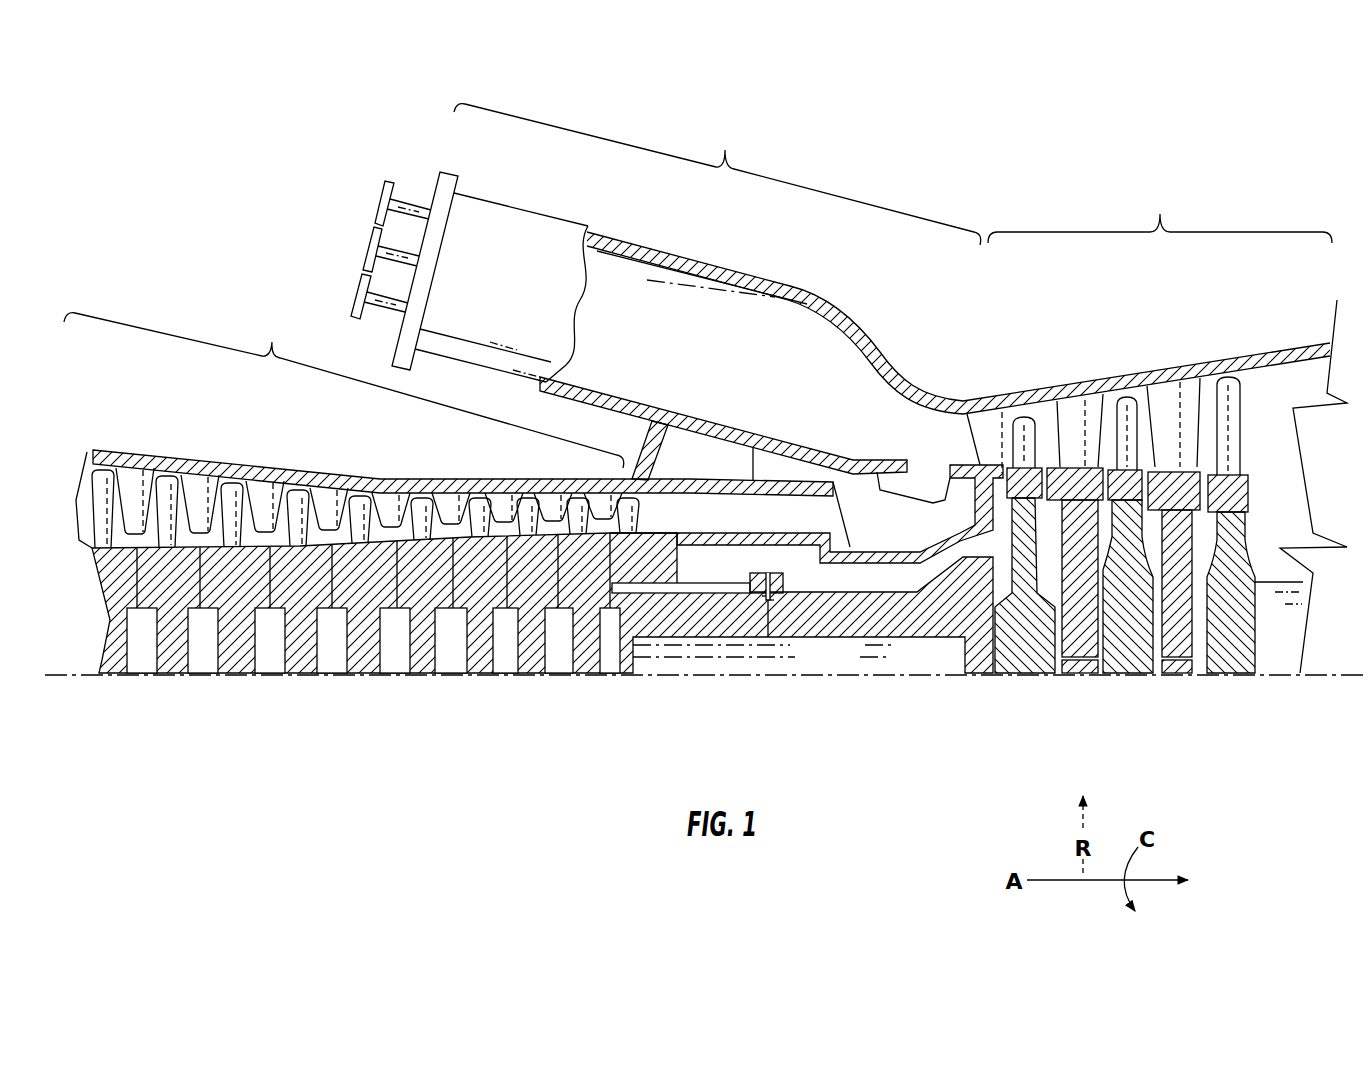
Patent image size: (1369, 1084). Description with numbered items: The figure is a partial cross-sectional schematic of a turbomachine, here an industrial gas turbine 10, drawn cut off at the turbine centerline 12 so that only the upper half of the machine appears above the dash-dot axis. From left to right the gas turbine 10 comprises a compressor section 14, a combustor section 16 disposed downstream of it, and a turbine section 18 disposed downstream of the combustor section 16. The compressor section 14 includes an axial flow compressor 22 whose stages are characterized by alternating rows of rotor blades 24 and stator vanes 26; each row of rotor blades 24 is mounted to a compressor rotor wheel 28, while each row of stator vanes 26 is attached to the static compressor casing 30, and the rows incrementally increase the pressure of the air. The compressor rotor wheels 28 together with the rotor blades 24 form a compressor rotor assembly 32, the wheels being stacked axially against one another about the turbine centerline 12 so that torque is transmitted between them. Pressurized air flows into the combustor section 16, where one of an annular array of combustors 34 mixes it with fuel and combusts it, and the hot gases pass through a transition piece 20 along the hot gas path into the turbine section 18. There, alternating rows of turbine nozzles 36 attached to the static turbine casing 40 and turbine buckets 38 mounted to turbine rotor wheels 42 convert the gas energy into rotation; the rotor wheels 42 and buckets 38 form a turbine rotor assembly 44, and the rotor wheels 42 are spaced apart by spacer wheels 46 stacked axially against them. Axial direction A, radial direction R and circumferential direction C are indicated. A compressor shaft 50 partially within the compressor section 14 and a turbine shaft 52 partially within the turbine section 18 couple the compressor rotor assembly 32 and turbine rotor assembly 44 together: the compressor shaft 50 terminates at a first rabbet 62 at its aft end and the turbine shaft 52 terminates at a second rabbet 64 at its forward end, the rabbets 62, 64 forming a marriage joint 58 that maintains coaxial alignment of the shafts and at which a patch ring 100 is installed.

The gas turbine 10 is at (198, 162).
The turbine centerline 12 is at (88, 676).
The compressor section 14 is at (344, 388).
The combustor section 16 is at (717, 204).
The turbine section 18 is at (1167, 426).
The transition piece 20 is at (712, 361).
The axial flow compressor 22 is at (193, 450).
The rotor blades 24 is at (167, 478).
The stator vanes 26 is at (267, 495).
The compressor rotor wheel 28 is at (295, 676).
The static compressor casing 30 is at (333, 497).
The compressor rotor assembly 32 is at (528, 706).
The combustor 34 is at (627, 222).
The turbine nozzles 36 is at (1167, 400).
The turbine buckets 38 is at (1022, 416).
The static turbine casing 40 is at (1208, 360).
The turbine rotor wheel 42 is at (1015, 676).
The turbine rotor assembly 44 is at (1153, 724).
The spacer wheels 46 is at (1078, 676).
The compressor shaft 50 is at (657, 627).
The turbine shaft 52 is at (877, 625).
The marriage joint 58 is at (784, 600).
The first rabbet 62 is at (760, 611).
The second rabbet 64 is at (783, 620).
The patch ring 100 is at (792, 580).